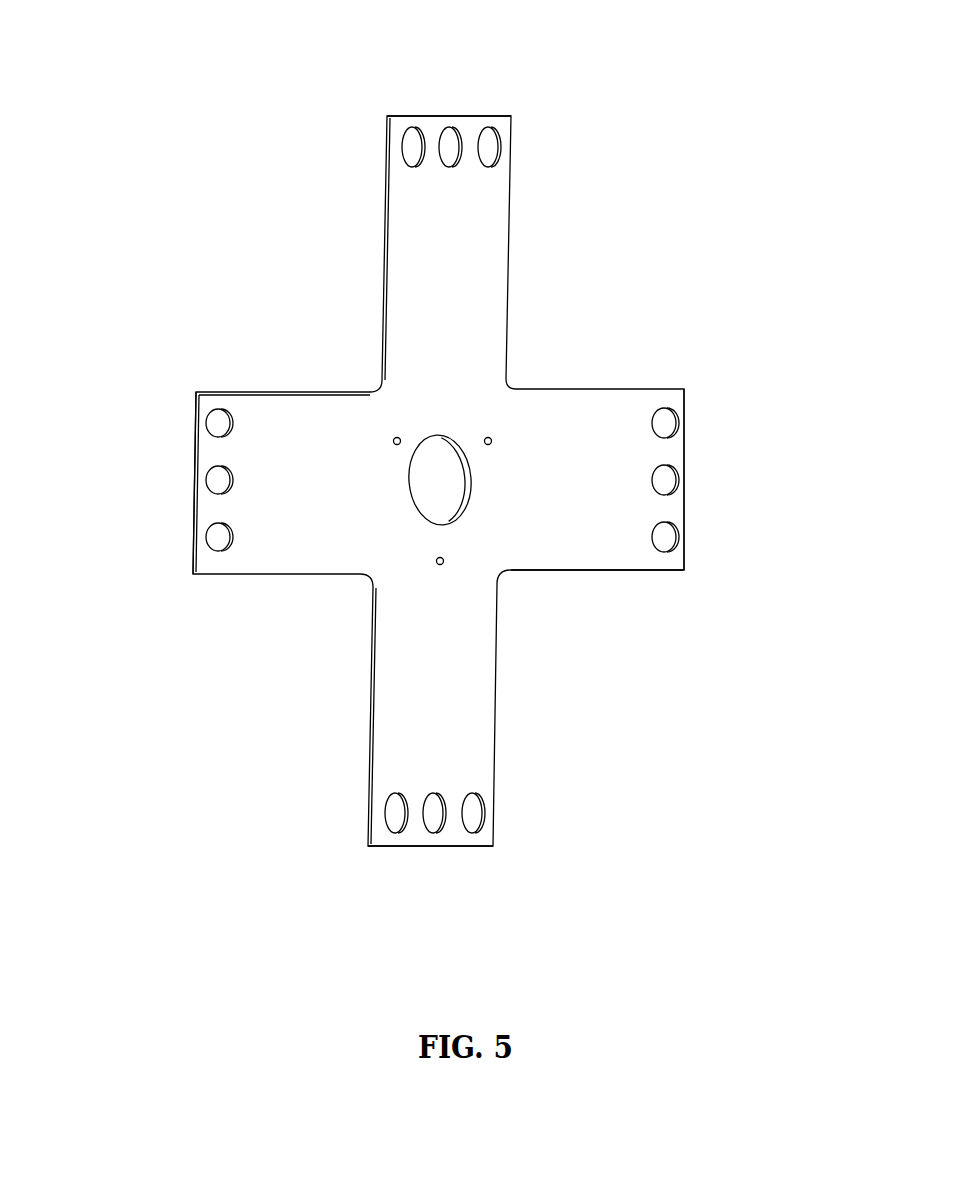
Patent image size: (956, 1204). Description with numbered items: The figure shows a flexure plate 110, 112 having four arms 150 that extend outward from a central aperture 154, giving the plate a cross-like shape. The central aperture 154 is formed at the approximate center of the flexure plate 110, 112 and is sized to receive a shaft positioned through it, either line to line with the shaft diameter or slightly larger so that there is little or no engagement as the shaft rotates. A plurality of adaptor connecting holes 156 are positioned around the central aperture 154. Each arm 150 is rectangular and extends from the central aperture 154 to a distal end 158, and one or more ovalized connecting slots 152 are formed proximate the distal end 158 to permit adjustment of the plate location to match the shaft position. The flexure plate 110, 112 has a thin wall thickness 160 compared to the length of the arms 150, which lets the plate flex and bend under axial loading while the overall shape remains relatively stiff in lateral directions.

The flexure plate 110 is at (449, 475).
The flexure plate 112 is at (449, 475).
The arm 150 is at (468, 237).
The ovalized connecting slot 152 is at (447, 147).
The central aperture 154 is at (437, 462).
The adaptor connecting hole 156 is at (397, 441).
The distal end 158 is at (412, 117).
The thin wall thickness 160 is at (620, 571).